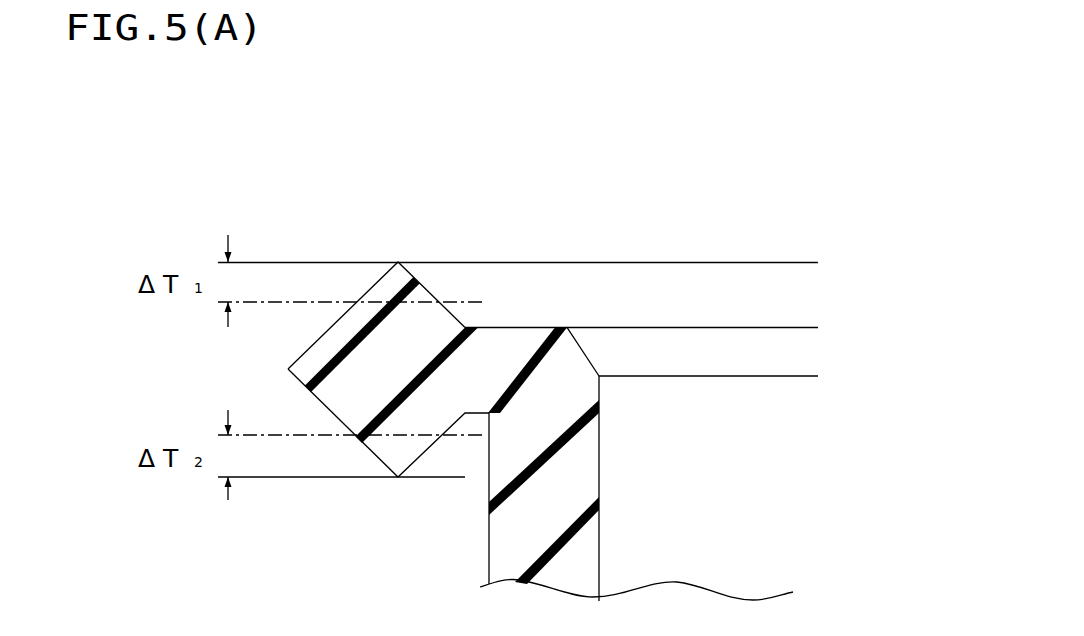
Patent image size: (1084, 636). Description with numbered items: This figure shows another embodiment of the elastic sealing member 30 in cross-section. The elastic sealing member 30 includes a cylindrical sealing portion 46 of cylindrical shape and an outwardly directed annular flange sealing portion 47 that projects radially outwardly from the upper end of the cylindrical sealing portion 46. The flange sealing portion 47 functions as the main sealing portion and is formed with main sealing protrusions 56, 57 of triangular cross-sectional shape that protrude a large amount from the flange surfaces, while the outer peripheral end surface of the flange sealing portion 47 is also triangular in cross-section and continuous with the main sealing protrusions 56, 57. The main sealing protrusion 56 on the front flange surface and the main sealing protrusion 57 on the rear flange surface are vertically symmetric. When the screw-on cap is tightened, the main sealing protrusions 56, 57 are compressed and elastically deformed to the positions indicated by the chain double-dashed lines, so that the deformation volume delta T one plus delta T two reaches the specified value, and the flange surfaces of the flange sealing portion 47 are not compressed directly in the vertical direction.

The elastic sealing member 30 is at (671, 224).
The cylindrical sealing portion 46 is at (585, 442).
The flange sealing portion 47 is at (515, 345).
The main sealing protrusion 56 is at (392, 262).
The main sealing protrusion 57 is at (396, 466).